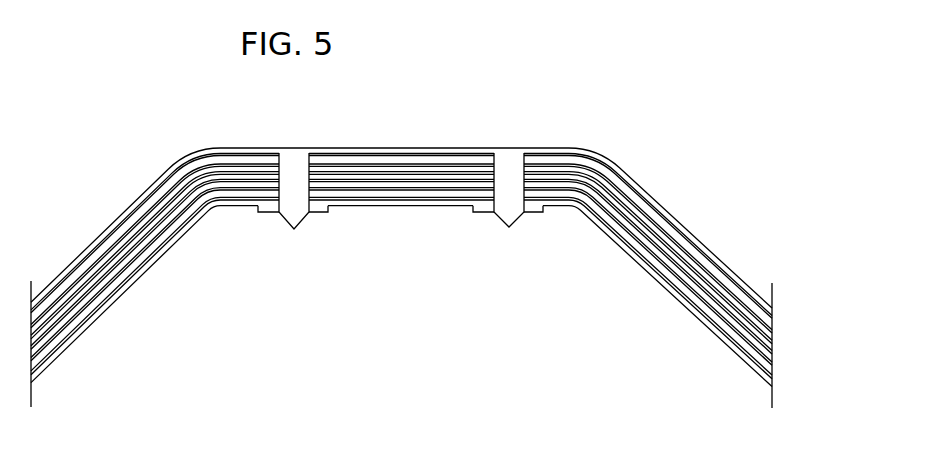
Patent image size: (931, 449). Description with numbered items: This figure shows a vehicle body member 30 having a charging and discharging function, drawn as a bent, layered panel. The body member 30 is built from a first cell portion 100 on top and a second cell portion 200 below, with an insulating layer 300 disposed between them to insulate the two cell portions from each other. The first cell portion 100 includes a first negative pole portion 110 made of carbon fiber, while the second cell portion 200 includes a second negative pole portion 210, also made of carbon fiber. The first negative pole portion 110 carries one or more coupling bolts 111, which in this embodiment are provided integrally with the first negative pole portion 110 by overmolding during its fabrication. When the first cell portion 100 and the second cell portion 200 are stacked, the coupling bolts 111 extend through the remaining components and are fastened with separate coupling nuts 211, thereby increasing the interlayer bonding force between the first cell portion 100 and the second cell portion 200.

The vehicle body member 30 is at (536, 136).
The first cell portion 100 is at (784, 318).
The first negative pole portion 110 is at (724, 262).
The coupling bolt 111 is at (295, 216).
The second cell portion 200 is at (786, 372).
The second negative pole portion 210 is at (690, 313).
The coupling nut 211 is at (323, 213).
The insulating layer 300 is at (773, 342).